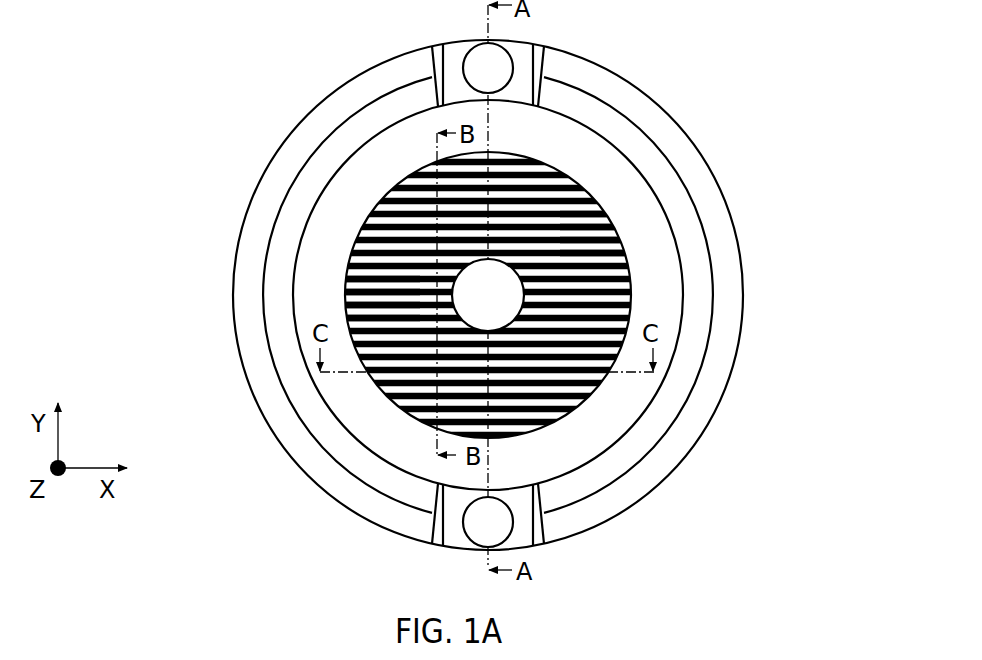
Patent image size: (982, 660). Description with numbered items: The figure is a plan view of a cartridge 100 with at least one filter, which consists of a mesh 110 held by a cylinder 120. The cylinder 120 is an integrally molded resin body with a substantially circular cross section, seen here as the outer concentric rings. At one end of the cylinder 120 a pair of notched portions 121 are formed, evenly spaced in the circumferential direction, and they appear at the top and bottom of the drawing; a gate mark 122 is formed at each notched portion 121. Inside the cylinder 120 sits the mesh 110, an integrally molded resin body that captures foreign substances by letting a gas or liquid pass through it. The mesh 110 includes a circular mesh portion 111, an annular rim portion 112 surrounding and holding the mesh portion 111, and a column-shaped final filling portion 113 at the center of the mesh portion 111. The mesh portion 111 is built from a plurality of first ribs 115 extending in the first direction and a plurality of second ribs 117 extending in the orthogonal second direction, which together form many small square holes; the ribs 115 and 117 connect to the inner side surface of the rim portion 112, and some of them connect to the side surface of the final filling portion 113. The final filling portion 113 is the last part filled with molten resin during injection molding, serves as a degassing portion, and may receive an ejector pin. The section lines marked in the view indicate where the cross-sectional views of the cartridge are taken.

The cartridge with at least one filter 100 is at (805, 33).
The mesh 110 is at (642, 153).
The mesh portion 111 is at (605, 393).
The rim portion 112 is at (405, 143).
The final filling portion 113 is at (353, 248).
The first rib 115 is at (345, 314).
The second rib 117 is at (626, 260).
The cylinder 120 is at (646, 73).
The notched portion 121 is at (536, 61).
The gate mark 122 is at (478, 65).